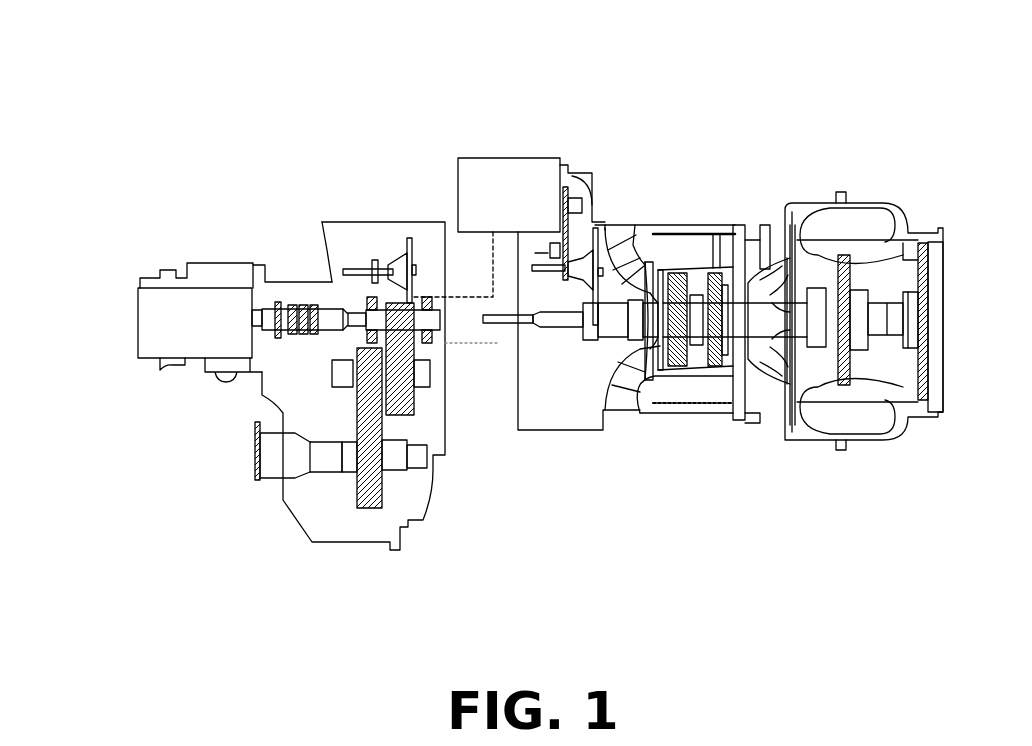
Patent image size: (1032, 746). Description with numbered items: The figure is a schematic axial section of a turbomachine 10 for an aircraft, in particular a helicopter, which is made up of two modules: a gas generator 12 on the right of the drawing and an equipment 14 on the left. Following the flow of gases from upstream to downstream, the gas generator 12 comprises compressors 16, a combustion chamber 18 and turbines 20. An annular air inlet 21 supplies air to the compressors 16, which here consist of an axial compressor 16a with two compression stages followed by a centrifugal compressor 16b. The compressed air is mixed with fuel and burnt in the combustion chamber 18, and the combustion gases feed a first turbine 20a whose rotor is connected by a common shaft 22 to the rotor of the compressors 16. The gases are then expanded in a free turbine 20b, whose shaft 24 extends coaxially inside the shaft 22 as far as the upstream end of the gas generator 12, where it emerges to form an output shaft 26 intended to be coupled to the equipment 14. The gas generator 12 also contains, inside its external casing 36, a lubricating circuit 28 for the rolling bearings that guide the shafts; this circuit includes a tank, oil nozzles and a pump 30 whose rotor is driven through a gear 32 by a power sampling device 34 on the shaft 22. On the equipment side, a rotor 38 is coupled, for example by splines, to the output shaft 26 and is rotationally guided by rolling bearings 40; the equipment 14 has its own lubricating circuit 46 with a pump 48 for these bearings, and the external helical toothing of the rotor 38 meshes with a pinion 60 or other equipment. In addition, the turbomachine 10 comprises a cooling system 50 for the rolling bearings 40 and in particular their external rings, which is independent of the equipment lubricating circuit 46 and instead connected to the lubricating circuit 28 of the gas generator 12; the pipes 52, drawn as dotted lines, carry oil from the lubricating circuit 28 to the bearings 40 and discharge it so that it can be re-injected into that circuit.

The turbomachine 10 is at (568, 76).
The gas generator 12 is at (724, 148).
The equipment 14 is at (232, 506).
The compressors 16 is at (760, 376).
The axial compressor 16a is at (700, 240).
The centrifugal compressor 16b is at (768, 238).
The combustion chamber 18 is at (856, 205).
The turbines 20 is at (852, 392).
The first turbine 20a is at (850, 258).
The free turbine 20b is at (922, 325).
The air inlet 21 is at (618, 420).
The common shaft 22 is at (792, 408).
The shaft 24 is at (922, 280).
The output shaft 26 is at (506, 312).
The lubricating circuit 28 is at (503, 158).
The pump 30 is at (553, 158).
The gear 32 is at (578, 232).
The power sampling device 34 is at (626, 245).
The external casing 36 is at (532, 432).
The rotor 38 is at (329, 308).
The rolling bearings 40 is at (358, 337).
The lubricating circuit 46 is at (136, 331).
The pump 48 is at (166, 366).
The cooling system 50 is at (478, 290).
The pipes 52 is at (490, 347).
The pinion 60 is at (403, 420).